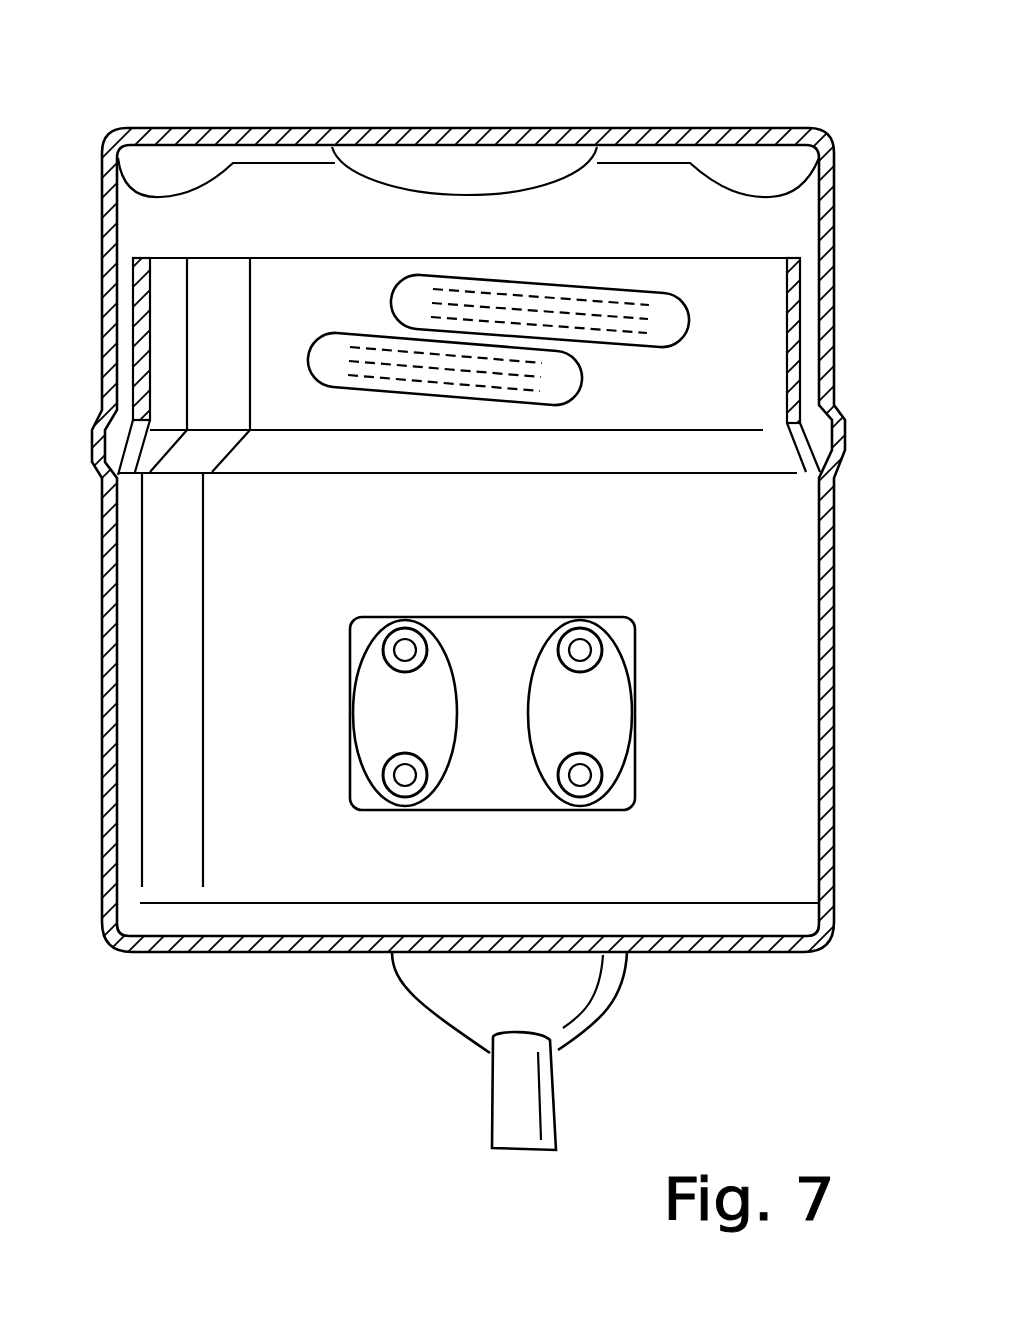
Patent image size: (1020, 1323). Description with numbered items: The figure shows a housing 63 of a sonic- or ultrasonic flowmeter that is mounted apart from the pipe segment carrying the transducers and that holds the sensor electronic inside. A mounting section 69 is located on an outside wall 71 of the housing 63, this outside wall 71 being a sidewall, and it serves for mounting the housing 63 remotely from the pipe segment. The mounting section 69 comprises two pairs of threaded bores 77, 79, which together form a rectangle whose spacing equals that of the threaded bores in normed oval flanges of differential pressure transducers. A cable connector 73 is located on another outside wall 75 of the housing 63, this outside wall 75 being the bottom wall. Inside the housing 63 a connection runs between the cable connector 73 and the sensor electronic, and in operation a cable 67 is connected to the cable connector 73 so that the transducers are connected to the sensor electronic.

The housing 63 is at (480, 124).
The cable 67 is at (513, 1107).
The mounting section 69 is at (500, 768).
The outside wall 71 is at (503, 563).
The cable connector 73 is at (442, 987).
The outside wall 75 is at (220, 953).
The threaded bores 77 is at (398, 620).
The threaded bores 79 is at (580, 622).